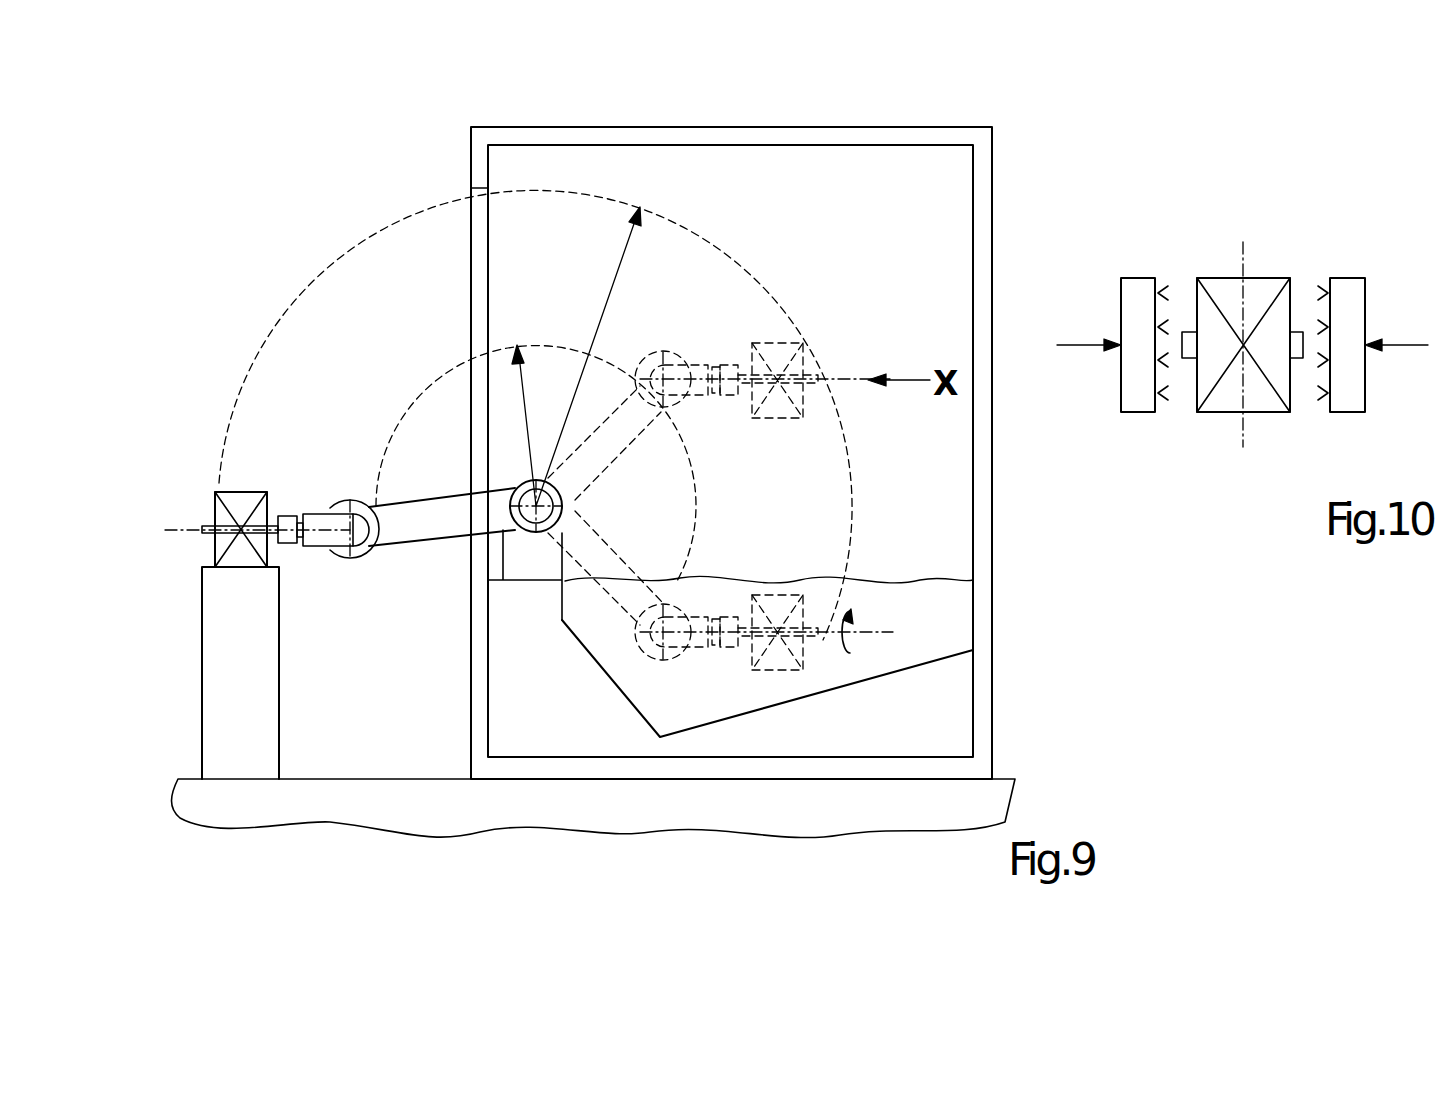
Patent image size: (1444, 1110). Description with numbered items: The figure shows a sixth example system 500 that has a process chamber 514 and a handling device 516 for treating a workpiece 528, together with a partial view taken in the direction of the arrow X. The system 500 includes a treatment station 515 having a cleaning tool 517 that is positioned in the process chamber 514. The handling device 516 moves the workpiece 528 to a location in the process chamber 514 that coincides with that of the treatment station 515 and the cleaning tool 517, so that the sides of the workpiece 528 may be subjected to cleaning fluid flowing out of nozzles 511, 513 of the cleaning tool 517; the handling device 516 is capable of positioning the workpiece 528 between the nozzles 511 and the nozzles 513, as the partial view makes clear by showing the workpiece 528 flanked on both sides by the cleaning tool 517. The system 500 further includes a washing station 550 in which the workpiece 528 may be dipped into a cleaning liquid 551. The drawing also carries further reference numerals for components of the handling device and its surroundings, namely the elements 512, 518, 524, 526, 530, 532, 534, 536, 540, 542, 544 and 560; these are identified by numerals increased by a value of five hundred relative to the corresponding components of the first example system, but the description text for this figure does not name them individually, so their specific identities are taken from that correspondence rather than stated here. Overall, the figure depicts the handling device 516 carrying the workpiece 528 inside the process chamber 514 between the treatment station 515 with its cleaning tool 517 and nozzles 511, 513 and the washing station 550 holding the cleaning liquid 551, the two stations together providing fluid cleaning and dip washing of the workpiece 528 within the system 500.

In FIG. 9, the system 500 is at (786, 419).
In FIG. 10, the nozzles 511 is at (1157, 410).
In FIG. 9, the stand 512 is at (218, 745).
In FIG. 10, the nozzles 513 is at (1330, 410).
In FIG. 9, the process chamber 514 is at (754, 137).
In FIG. 9, the treatment station 515 is at (818, 342).
In FIG. 10, the treatment station 515 is at (1283, 217).
In FIG. 9, the handling device 516 is at (414, 543).
In FIG. 10, the cleaning tool 517 is at (1140, 278).
In FIG. 9, the support 518 is at (545, 572).
In FIG. 9, the coupling block 524 is at (296, 543).
In FIG. 9, the shaft 526 is at (212, 526).
In FIG. 9, the workpiece 528 is at (240, 492).
In FIG. 10, the workpiece 528 is at (1215, 278).
In FIG. 9, the pivot axis 530 is at (562, 504).
In FIG. 9, the rotation axis 532 is at (360, 545).
In FIG. 9, the base 534 is at (340, 777).
In FIG. 9, the rotation direction 536 is at (848, 652).
In FIG. 9, the pivot joint 540 is at (556, 487).
In FIG. 9, the drive unit 542 is at (359, 502).
In FIG. 9, the drive axis 544 is at (165, 530).
In FIG. 9, the washing station 550 is at (950, 628).
In FIG. 9, the cleaning liquid 551 is at (716, 708).
In FIG. 9, the working range 560 is at (400, 245).